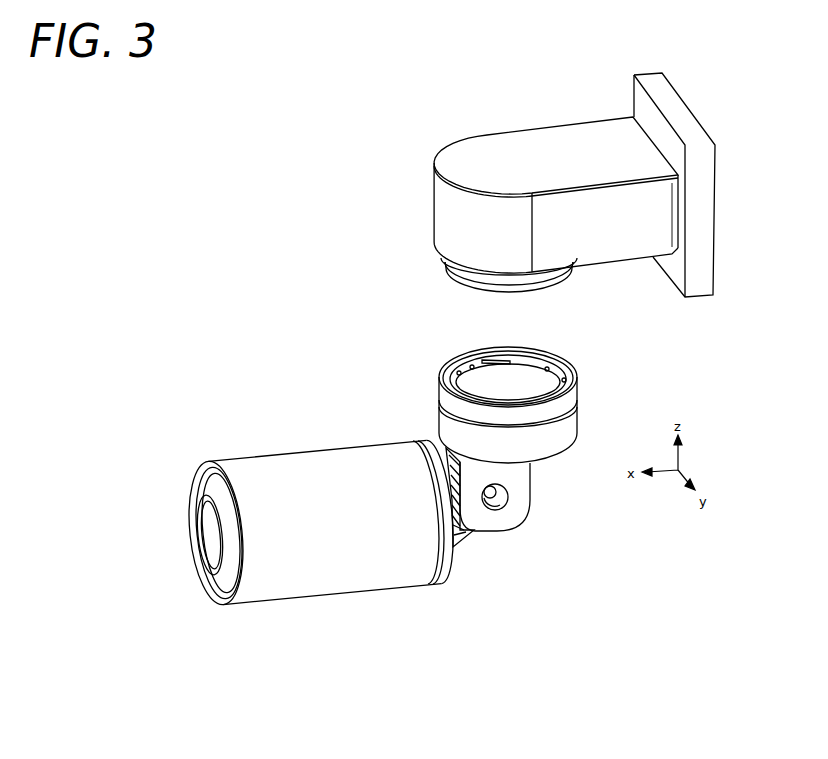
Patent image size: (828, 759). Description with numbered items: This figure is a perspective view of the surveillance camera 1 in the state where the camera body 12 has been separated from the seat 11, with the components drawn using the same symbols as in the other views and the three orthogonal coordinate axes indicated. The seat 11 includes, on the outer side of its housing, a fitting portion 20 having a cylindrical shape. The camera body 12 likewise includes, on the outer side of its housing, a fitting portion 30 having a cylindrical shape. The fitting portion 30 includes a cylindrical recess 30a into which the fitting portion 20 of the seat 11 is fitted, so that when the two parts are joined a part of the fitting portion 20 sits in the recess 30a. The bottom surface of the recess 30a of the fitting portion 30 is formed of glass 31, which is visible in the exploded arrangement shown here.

The surveillance camera 1 is at (336, 246).
The seat 11 is at (545, 125).
The camera body 12 is at (368, 445).
The fitting portion 20 is at (440, 260).
The fitting portion 30 is at (438, 386).
The recess 30a is at (465, 370).
The glass 31 is at (528, 385).